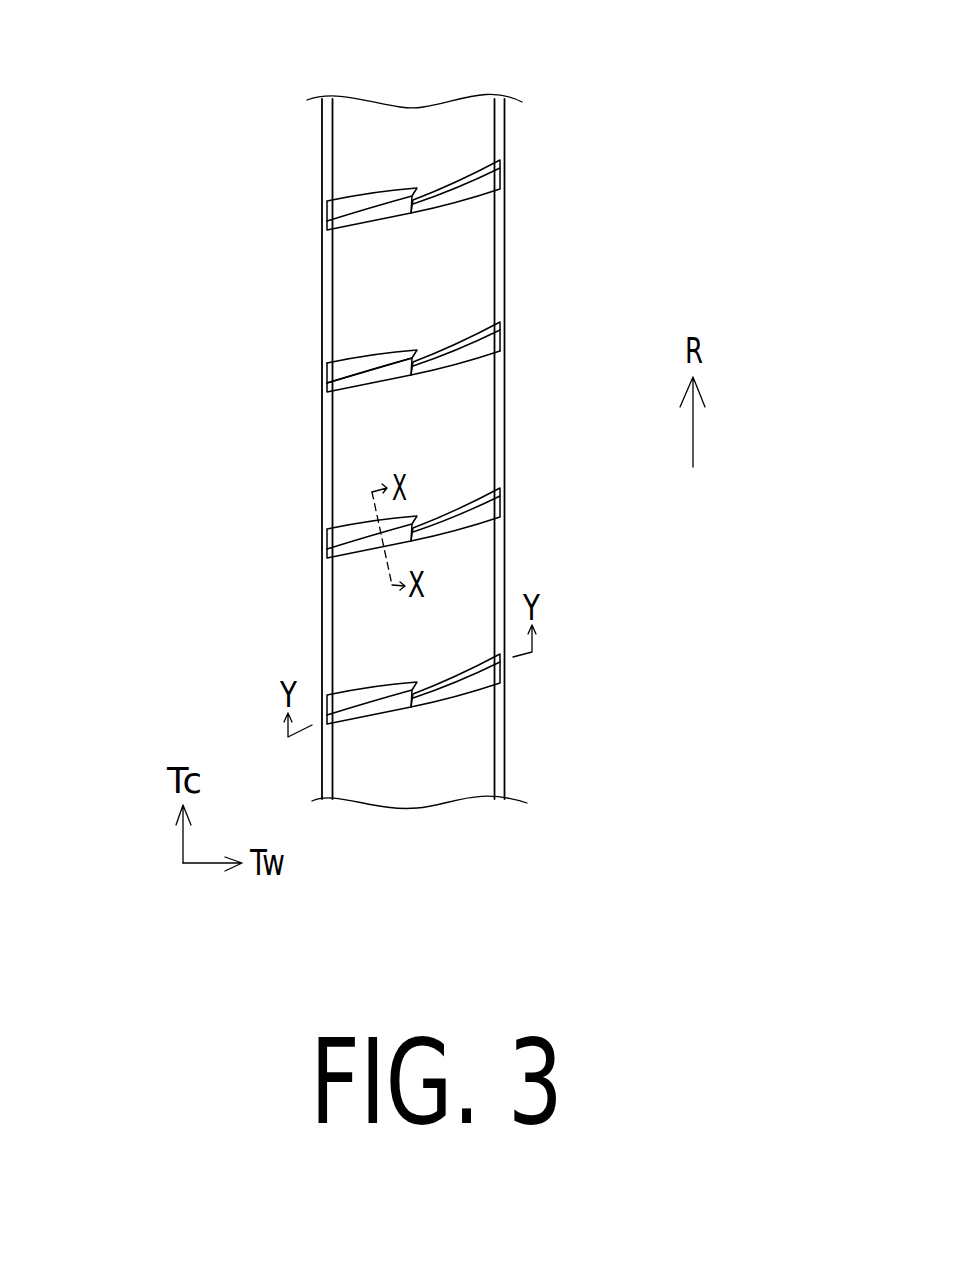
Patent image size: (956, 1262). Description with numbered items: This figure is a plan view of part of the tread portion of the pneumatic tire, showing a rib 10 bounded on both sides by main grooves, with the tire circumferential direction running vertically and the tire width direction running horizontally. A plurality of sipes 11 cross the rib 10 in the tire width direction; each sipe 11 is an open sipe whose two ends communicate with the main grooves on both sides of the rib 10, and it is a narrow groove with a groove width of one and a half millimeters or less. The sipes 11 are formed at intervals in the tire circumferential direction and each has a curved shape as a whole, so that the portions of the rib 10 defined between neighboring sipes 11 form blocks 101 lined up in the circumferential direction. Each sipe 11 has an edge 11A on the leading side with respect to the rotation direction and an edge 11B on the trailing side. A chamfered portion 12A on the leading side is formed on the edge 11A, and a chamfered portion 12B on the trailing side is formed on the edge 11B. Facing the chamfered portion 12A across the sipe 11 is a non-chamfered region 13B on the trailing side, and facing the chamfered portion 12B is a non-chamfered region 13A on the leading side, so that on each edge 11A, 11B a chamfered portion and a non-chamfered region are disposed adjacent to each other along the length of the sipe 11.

The rib 10 is at (517, 70).
The block 101 is at (437, 261).
The sipe 11 is at (473, 340).
The edge on the leading side 11A is at (402, 370).
The edge on the trailing side 11B is at (438, 378).
The chamfered portion on the leading side 12A is at (375, 367).
The chamfered portion on the trailing side 12B is at (453, 373).
The non-chamfered region on the leading side 13A is at (453, 338).
The non-chamfered region on the trailing side 13B is at (375, 388).